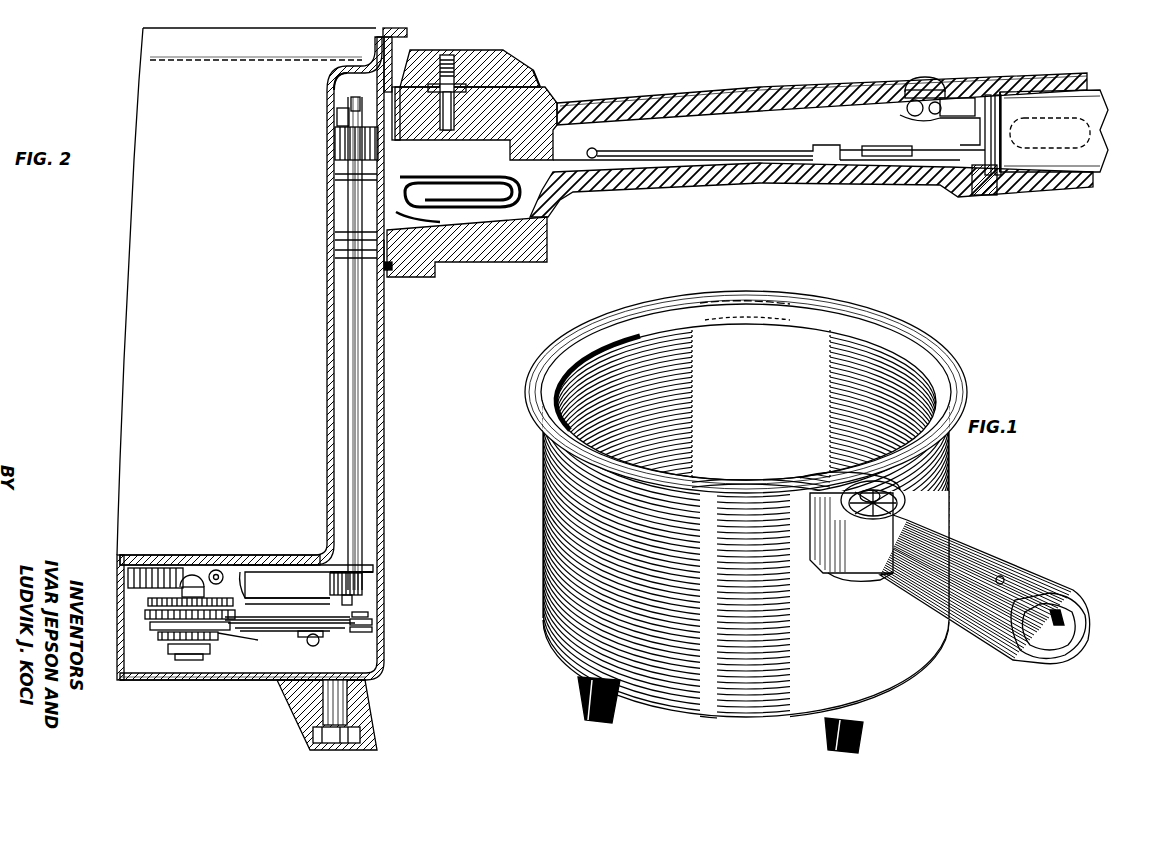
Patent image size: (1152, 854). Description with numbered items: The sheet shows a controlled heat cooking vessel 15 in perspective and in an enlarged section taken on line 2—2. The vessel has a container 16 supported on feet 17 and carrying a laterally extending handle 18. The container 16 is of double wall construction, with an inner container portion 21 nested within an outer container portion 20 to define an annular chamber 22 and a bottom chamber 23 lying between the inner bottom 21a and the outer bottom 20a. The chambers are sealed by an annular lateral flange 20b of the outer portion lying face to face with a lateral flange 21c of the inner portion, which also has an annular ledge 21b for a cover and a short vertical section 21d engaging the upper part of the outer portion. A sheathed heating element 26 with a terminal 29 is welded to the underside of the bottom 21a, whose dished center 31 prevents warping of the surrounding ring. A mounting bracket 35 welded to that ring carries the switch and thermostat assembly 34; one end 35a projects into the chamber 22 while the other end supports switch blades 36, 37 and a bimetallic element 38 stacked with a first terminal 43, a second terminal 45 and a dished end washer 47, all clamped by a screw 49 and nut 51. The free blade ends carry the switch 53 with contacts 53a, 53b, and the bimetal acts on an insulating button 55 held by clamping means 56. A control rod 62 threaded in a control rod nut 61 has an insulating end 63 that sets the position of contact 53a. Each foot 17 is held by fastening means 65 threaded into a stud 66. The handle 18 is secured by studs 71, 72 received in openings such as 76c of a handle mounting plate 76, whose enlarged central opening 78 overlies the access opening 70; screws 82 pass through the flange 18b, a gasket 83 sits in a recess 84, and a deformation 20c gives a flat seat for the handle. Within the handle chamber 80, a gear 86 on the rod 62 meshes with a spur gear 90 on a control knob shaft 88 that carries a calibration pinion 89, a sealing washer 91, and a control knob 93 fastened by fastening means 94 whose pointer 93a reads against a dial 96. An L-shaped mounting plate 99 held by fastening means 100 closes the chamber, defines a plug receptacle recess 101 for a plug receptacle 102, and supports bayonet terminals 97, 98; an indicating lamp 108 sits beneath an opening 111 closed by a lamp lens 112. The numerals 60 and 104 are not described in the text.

In FIG. 2, the controlled heat cooking vessel 15 is at (125, 690).
In FIG. 1, the controlled heat cooking vessel 15 is at (720, 737).
In FIG. 2, the container 16 is at (386, 368).
In FIG. 1, the container 16 is at (609, 307).
In FIG. 2, the supporting feet 17 is at (290, 686).
In FIG. 1, the supporting feet 17 is at (600, 722).
In FIG. 2, the handle 18 is at (828, 182).
In FIG. 1, the handle 18 is at (1000, 652).
In FIG. 2, the flange 18b is at (435, 270).
In FIG. 1, the flange 18b is at (818, 574).
In FIG. 2, the outer container portion 20 is at (385, 478).
In FIG. 1, the outer container portion 20 is at (695, 712).
In FIG. 2, the bottom of outer container portion 20a is at (172, 682).
In FIG. 2, the annular lateral flange 20b is at (395, 37).
In FIG. 1, the deformation 20c is at (803, 492).
In FIG. 2, the inner container portion 21 is at (326, 443).
In FIG. 1, the inner container portion 21 is at (777, 361).
In FIG. 2, the bottom of inner container portion 21a is at (165, 568).
In FIG. 2, the annular horizontal ledge 21b is at (362, 62).
In FIG. 1, the annular horizontal ledge 21b is at (800, 322).
In FIG. 2, the lateral flange 21c is at (395, 28).
In FIG. 1, the lateral flange 21c is at (660, 305).
In FIG. 2, the short vertical section 21d is at (376, 34).
In FIG. 1, the short vertical section 21d is at (722, 310).
In FIG. 2, the annular chamber 22 is at (378, 395).
In FIG. 2, the bottom chamber 23 is at (152, 680).
In FIG. 2, the heating element 26 is at (120, 578).
In FIG. 2, the terminal 29 is at (218, 570).
In FIG. 2, the dished center 31 is at (130, 556).
In FIG. 2, the switch and thermostat assembly 34 is at (318, 598).
In FIG. 2, the mounting bracket 35 is at (302, 563).
In FIG. 2, the end of mounting bracket 35a is at (372, 568).
In FIG. 2, the switch blade 36 is at (322, 618).
In FIG. 2, the switch blade 37 is at (285, 633).
In FIG. 2, the bimetallic element 38 is at (285, 610).
In FIG. 2, the first terminal 43 is at (148, 608).
In FIG. 2, the second terminal 45 is at (147, 622).
In FIG. 2, the dished end washer 47 is at (158, 640).
In FIG. 2, the screw 49 is at (192, 575).
In FIG. 2, the nut 51 is at (204, 652).
In FIG. 2, the switch 53 is at (372, 622).
In FIG. 2, the contact 53a is at (368, 615).
In FIG. 2, the contact 53b is at (362, 633).
In FIG. 2, the insulating button 55 is at (316, 645).
In FIG. 2, the clamping means 56 is at (305, 640).
In FIG. 2, the spring arm 60 is at (238, 639).
In FIG. 2, the control rod nut 61 is at (362, 598).
In FIG. 2, the control rod 62 is at (360, 436).
In FIG. 2, the insulating end 63 is at (355, 610).
In FIG. 2, the fastening means 65 is at (335, 744).
In FIG. 2, the stud 66 is at (348, 700).
In FIG. 2, the access opening 70 is at (376, 180).
In FIG. 2, the stud 71 is at (336, 240).
In FIG. 2, the stud 72 is at (338, 118).
In FIG. 2, the handle mounting plate 76 is at (348, 210).
In FIG. 2, the opening in handle mounting plate 76c is at (353, 100).
In FIG. 2, the enlarged central opening 78 is at (335, 174).
In FIG. 2, the chamber 80 is at (708, 120).
In FIG. 1, the fastening screws 82 is at (845, 582).
In FIG. 2, the gasket 83 is at (388, 280).
In FIG. 2, the recess 84 is at (387, 272).
In FIG. 2, the gear 86 is at (335, 143).
In FIG. 2, the control knob shaft 88 is at (445, 110).
In FIG. 2, the calibration pinion 89 is at (462, 84).
In FIG. 2, the spur gear 90 is at (452, 150).
In FIG. 2, the O-ring sealing washer 91 is at (396, 90).
In FIG. 2, the control knob 93 is at (490, 50).
In FIG. 2, the pointerlike projection 93a is at (535, 62).
In FIG. 1, the pointerlike projection 93a is at (905, 496).
In FIG. 2, the fastening means 94 is at (452, 55).
In FIG. 2, the dial 96 is at (540, 100).
In FIG. 1, the dial 96 is at (900, 510).
In FIG. 2, the bayonet terminal 97 is at (1102, 122).
In FIG. 1, the bayonet terminal 97 is at (1060, 655).
In FIG. 1, the bayonet terminal 98 is at (1062, 645).
In FIG. 2, the L-shaped mounting plate 99 is at (1000, 178).
In FIG. 2, the fastening means 100 is at (975, 195).
In FIG. 2, the plug receptacle recess 101 is at (1050, 92).
In FIG. 1, the plug receptacle recess 101 is at (1030, 665).
In FIG. 2, the plug receptacle 102 is at (1080, 95).
In FIG. 2, the bracket 104 is at (243, 584).
In FIG. 2, the indicating lamp 108 is at (912, 105).
In FIG. 2, the opening 111 is at (910, 80).
In FIG. 2, the lamp lens 112 is at (928, 77).
In FIG. 1, the lamp lens 112 is at (1005, 578).
In FIG. 1, the section line 2 is at (855, 440).